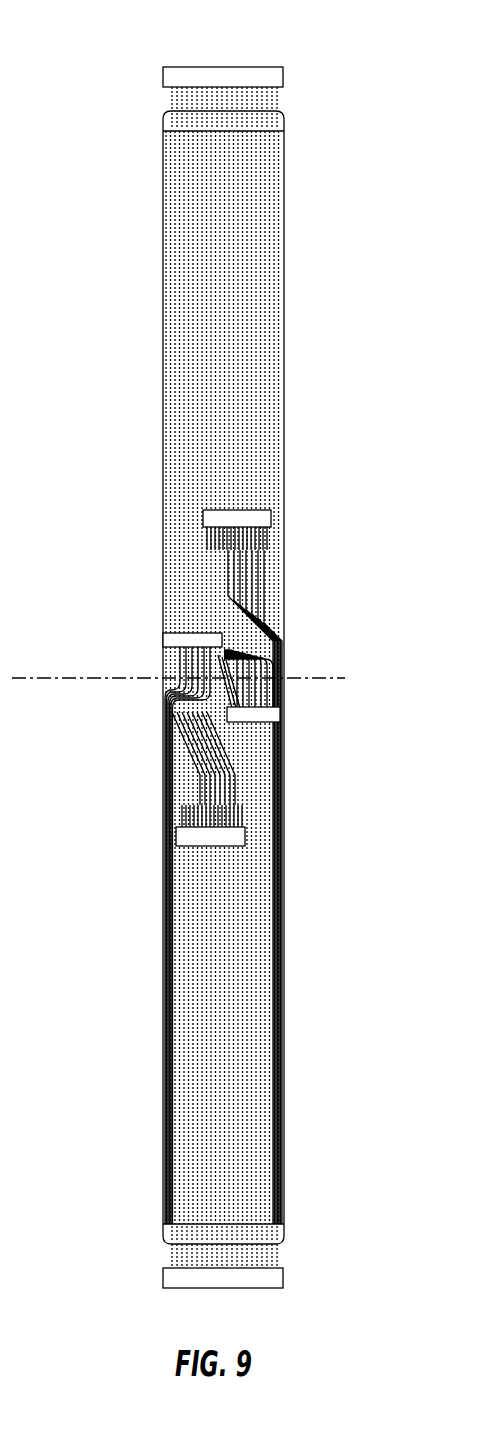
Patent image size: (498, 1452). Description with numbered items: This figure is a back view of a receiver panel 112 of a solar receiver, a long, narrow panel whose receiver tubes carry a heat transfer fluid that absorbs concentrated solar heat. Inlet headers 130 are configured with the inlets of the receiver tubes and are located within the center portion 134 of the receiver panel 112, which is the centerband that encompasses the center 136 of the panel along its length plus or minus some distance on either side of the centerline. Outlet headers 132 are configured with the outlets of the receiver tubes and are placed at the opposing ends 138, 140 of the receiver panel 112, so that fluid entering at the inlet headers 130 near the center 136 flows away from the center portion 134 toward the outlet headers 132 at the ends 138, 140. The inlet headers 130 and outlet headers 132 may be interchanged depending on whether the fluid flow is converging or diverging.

The receiver panel 112 is at (313, 265).
The inlet header 130 is at (175, 640).
The outlet header 132 is at (243, 68).
The center portion 134 is at (363, 505).
The center 136 is at (60, 680).
The end of the receiver panel 138 is at (305, 91).
The end of the receiver panel 140 is at (292, 1245).